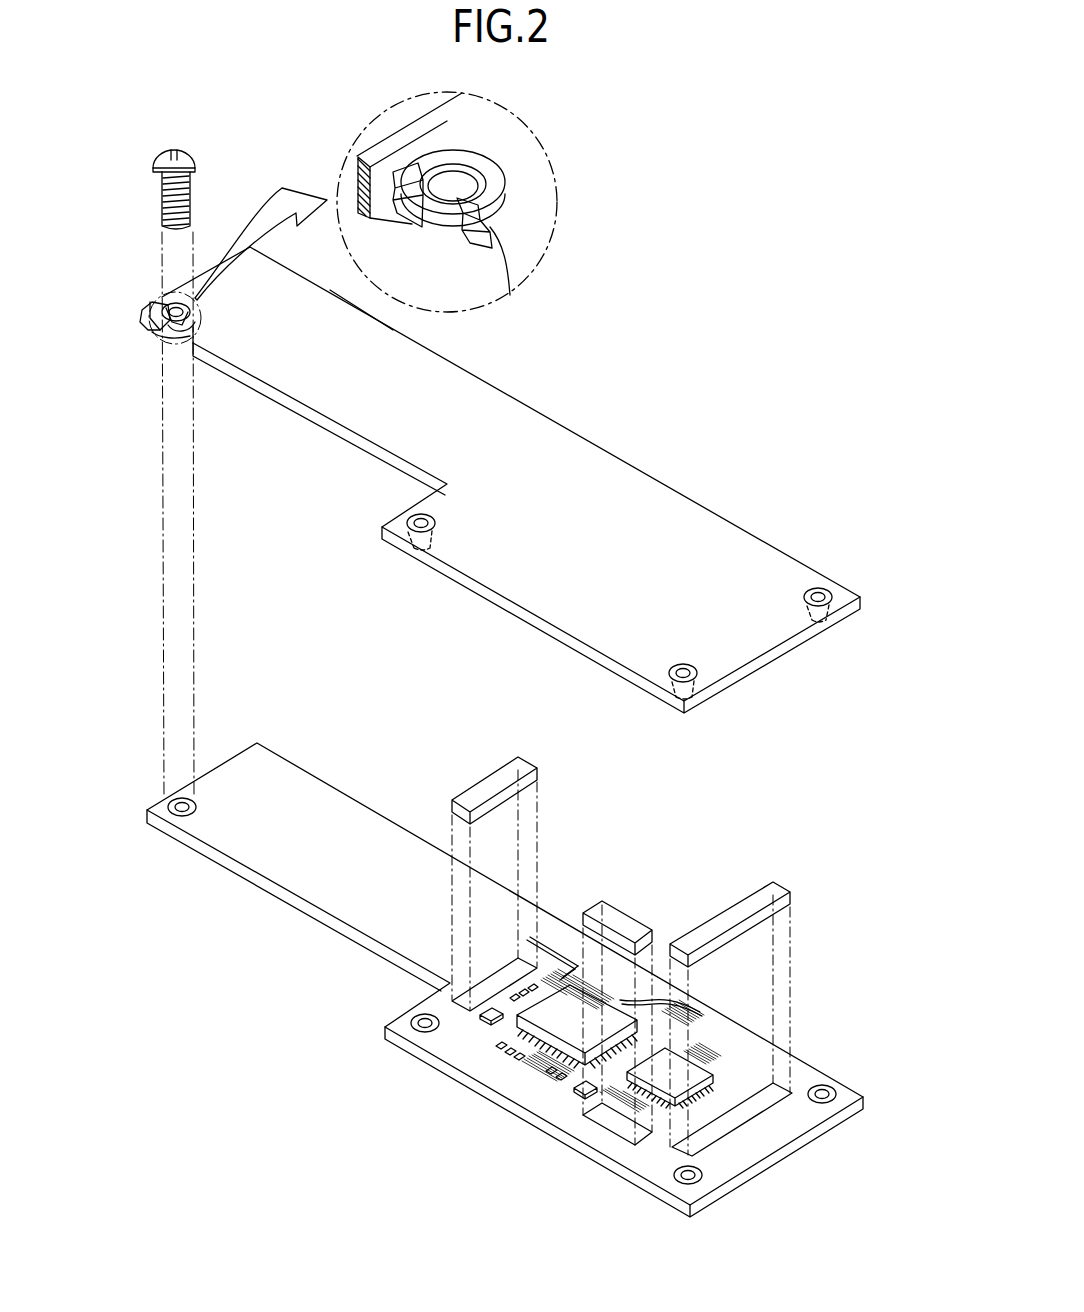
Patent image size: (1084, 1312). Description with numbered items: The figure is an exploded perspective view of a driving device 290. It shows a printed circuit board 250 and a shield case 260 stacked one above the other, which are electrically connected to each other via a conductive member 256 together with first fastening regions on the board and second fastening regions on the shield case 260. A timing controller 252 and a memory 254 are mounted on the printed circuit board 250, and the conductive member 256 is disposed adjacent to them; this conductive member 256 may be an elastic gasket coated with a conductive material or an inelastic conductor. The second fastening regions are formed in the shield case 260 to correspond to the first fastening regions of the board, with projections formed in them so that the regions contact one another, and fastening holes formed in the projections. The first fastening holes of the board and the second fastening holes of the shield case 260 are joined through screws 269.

The driving device 290 is at (722, 251).
The shield case 260 is at (676, 512).
The printed circuit board 250 is at (343, 912).
The screw 269 is at (196, 162).
The conductive member 256 is at (717, 922).
The timing controller 252 is at (560, 995).
The memory 254 is at (695, 1072).